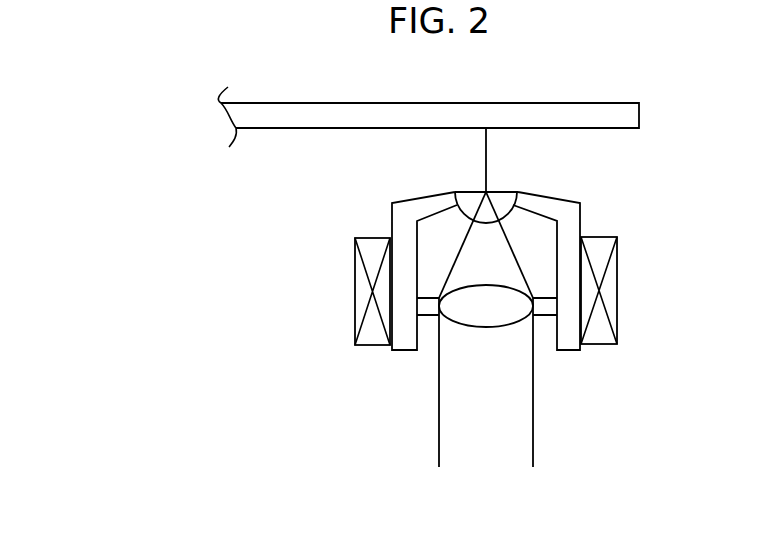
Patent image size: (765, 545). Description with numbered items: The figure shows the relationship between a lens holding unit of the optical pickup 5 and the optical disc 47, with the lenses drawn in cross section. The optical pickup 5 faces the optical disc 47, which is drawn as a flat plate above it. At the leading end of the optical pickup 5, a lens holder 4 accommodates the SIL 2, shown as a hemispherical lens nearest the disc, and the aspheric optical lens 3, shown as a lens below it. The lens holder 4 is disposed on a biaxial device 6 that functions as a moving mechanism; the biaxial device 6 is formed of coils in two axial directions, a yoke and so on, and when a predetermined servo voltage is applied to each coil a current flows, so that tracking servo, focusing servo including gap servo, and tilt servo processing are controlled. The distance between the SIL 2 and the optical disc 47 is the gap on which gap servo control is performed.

The optical disc 47 is at (553, 103).
The optical pickup 5 is at (417, 182).
The SIL 2 is at (507, 192).
The lens holder 4 is at (392, 209).
The aspheric optical lens 3 is at (505, 318).
The biaxial device 6 is at (613, 328).